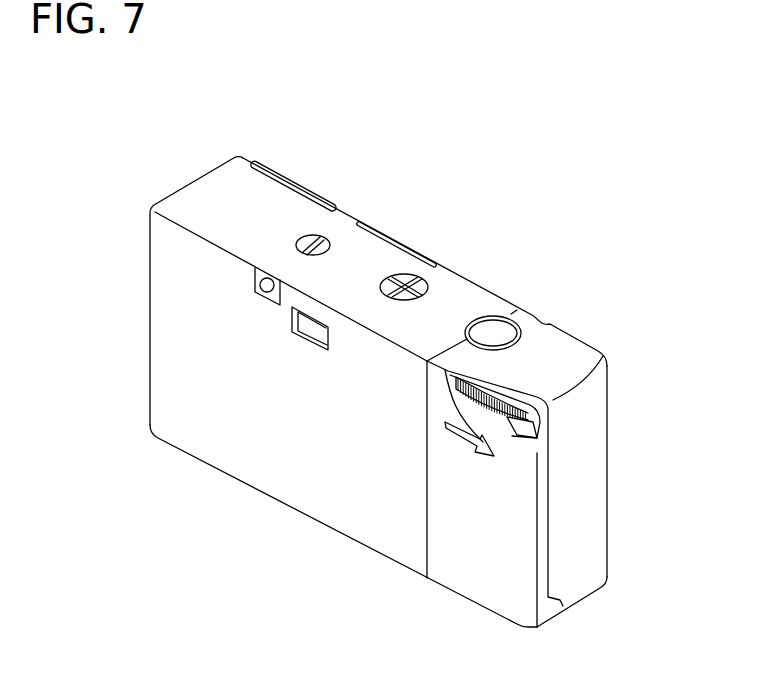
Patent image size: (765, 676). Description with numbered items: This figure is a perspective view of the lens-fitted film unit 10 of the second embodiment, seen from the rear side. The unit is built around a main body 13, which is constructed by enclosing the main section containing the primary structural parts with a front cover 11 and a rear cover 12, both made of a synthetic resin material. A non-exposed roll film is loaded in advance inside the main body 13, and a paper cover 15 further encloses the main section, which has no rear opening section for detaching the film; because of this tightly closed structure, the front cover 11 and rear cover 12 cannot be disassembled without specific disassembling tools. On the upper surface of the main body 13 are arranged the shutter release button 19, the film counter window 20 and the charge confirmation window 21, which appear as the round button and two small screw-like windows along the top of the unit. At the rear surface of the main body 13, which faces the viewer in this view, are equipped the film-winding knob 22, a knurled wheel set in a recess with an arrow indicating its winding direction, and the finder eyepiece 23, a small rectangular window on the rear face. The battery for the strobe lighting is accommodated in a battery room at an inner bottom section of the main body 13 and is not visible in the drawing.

The lens-fitted film unit 10 is at (466, 164).
The front cover 11 is at (590, 433).
The rear cover 12 is at (543, 481).
The main body 13 is at (671, 428).
The paper cover 15 is at (205, 190).
The shutter release button 19 is at (487, 332).
The film counter window 20 is at (389, 273).
The charge confirmation window 21 is at (311, 233).
The film-winding knob 22 is at (501, 420).
The finder eyepiece 23 is at (312, 351).